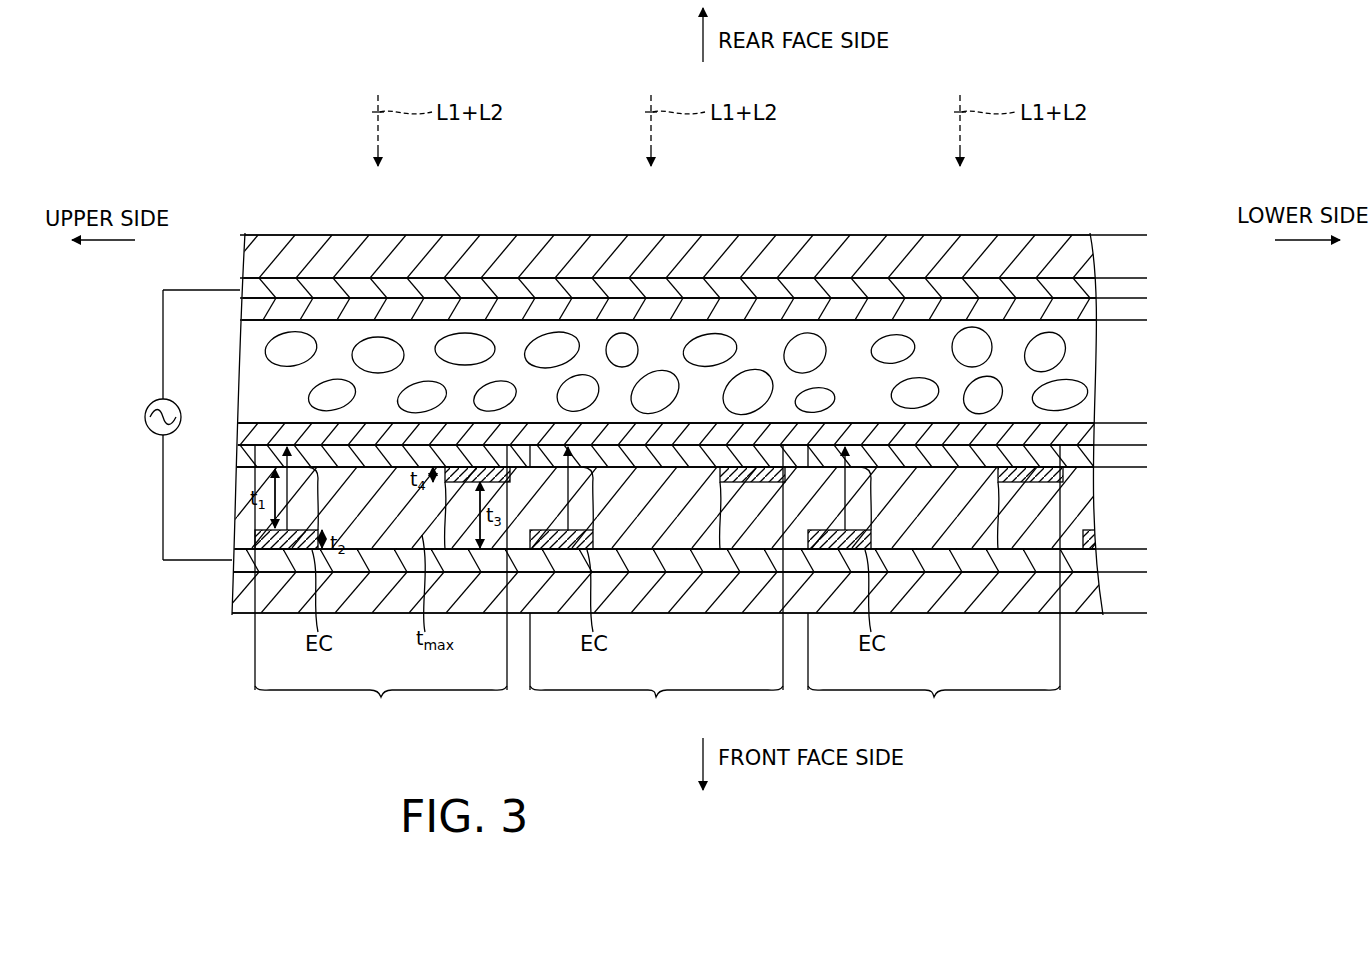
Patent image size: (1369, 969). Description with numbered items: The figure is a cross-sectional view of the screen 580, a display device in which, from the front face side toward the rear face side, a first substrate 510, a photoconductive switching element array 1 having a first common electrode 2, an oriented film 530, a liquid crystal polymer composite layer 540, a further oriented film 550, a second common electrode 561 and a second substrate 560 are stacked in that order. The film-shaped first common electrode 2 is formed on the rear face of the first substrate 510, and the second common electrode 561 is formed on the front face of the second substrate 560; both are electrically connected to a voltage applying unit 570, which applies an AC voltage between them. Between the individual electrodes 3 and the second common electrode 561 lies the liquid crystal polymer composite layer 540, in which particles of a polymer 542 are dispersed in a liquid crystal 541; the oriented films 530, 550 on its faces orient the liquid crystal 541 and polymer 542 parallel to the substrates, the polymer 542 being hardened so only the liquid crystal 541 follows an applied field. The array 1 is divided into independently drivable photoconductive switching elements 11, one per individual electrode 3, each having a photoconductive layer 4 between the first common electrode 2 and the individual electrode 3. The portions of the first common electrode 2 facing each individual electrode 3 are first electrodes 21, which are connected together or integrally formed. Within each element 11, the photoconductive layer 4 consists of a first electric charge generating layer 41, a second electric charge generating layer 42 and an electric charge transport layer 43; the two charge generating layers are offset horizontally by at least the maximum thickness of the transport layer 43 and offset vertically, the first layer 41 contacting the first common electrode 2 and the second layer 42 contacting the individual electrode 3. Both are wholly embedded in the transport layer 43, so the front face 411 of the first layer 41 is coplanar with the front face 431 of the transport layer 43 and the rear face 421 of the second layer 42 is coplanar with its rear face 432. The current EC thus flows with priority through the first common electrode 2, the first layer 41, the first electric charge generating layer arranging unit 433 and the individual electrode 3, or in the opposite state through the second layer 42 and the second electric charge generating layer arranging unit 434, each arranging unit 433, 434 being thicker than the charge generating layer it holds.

The photoconductive switching element array 1 is at (698, 550).
The first common electrode 2 is at (701, 560).
The individual electrode 3 is at (1147, 446).
The photoconductive layer 4 is at (689, 561).
The photoconductive switching element 11 is at (657, 706).
The first electrode 21 is at (366, 560).
The first electric charge generating layer 41 is at (663, 588).
The second electric charge generating layer 42 is at (1060, 478).
The electric charge transport layer 43 is at (684, 508).
The front face of first electric charge generating layer 411 is at (270, 550).
The rear face of second electric charge generating layer 421 is at (518, 424).
The front face of electric charge transport layer 431 is at (700, 585).
The rear face of electric charge transport layer 432 is at (612, 423).
The first electric charge generating layer arranging unit 433 is at (320, 488).
The second electric charge generating layer arranging unit 434 is at (445, 518).
The first substrate 510 is at (715, 592).
The oriented film 530 is at (1147, 424).
The liquid crystal polymer composite layer 540 is at (697, 372).
The liquid crystal 541 is at (1078, 360).
The polymer 542 is at (278, 348).
The oriented film 550 is at (1147, 299).
The second substrate 560 is at (1147, 235).
The second common electrode 561 is at (1147, 279).
The voltage applying unit 570 is at (152, 400).
The screen 580 is at (725, 419).